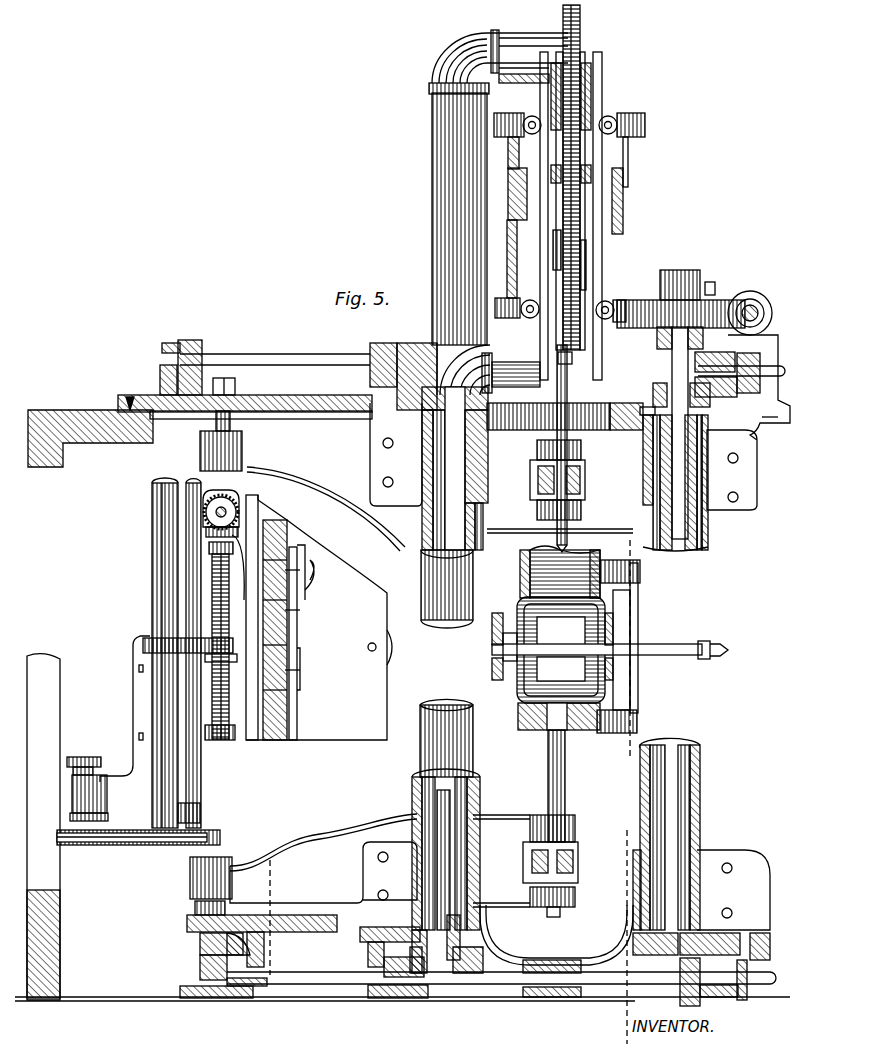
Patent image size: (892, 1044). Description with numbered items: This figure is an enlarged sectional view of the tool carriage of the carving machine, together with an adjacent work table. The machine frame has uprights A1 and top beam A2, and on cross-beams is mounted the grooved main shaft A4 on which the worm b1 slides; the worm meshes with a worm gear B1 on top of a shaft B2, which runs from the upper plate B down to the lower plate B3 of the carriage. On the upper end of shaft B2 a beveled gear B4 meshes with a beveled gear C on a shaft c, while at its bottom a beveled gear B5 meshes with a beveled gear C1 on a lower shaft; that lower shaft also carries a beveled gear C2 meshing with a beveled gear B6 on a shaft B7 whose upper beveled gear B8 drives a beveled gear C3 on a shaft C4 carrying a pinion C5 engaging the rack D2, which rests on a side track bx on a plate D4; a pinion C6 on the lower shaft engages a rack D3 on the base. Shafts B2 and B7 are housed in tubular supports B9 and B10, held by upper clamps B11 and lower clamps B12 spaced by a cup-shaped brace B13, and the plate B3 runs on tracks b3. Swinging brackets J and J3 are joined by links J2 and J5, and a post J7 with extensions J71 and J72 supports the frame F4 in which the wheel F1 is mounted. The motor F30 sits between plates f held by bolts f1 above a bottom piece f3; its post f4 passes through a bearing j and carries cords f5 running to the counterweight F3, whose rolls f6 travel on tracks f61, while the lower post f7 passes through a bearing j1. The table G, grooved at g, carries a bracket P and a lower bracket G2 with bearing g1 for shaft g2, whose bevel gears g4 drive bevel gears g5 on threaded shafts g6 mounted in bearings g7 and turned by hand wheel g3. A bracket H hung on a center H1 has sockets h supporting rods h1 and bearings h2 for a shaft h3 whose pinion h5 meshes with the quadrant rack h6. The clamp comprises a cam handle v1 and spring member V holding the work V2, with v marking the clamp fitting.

The extension of post J7 J72 is at (522, 40).
The wheel F1 is at (582, 40).
The rolls f6 is at (530, 116).
The weighted frame F3 is at (626, 118).
The vertical tracks f61 is at (600, 162).
The cords f5 is at (578, 262).
The frame F4 is at (584, 292).
The worm gear B1 is at (716, 296).
The main shaft A4 is at (750, 300).
The worm b1 is at (768, 302).
The clamps B11 is at (712, 440).
The tubular support B9 is at (708, 530).
The beveled gear C is at (708, 360).
The shaft c is at (744, 364).
The shaft B2 is at (680, 358).
The beveled gear B4 is at (660, 398).
The top beam A2 is at (96, 410).
The plate B is at (240, 399).
The plate D4 is at (130, 396).
The rack D2 is at (162, 370).
The pinion C5 is at (172, 343).
The shaft C4 is at (330, 356).
The beveled gear C3 is at (405, 343).
The swinging bracket J3 is at (261, 439).
The side track bx is at (200, 424).
The bevel gears g4 is at (225, 473).
The beveled gear B8 is at (487, 358).
The extension of post J7 J71 is at (520, 368).
The tubular support B10 is at (490, 522).
The shaft B7 is at (420, 500).
The bearing j is at (538, 478).
The link J5 is at (585, 480).
The post f4 is at (565, 545).
The bolts f1 is at (528, 568).
The vertical plates f is at (520, 605).
The motor F30 is at (542, 665).
The bottom piece f3 is at (540, 728).
The post f7 is at (562, 810).
The bearing j1 is at (578, 845).
The link J2 is at (580, 868).
The post J7 is at (478, 590).
The brace B13 is at (570, 960).
The beveled gear B6 is at (452, 975).
The beveled gear B5 is at (640, 968).
The clamps B12 is at (566, 886).
The beveled gear C1 is at (668, 992).
The upright A1 is at (43, 827).
The center H1 is at (86, 760).
The bracket H is at (128, 760).
The sockets h is at (160, 695).
The rods h1 is at (152, 600).
The shaft h3 is at (195, 750).
The bearings h2 is at (200, 815).
The quadrant rack h6 is at (120, 846).
The pinion h5 is at (195, 860).
The shaft g2 is at (218, 505).
The bearing g1 is at (232, 506).
The bevel gear g5 is at (227, 529).
The threaded shaft g6 is at (214, 605).
The hand wheel g3 is at (206, 640).
The bearings g7 is at (218, 742).
The groove g is at (262, 520).
The lower bracket G2 is at (248, 750).
The table G is at (292, 710).
The lever v is at (296, 545).
The cam handle v1 is at (302, 585).
The spring member V is at (300, 612).
The work V2 is at (297, 650).
The bracket P is at (364, 647).
The plate B3 is at (275, 860).
The swinging bracket J is at (296, 915).
The tracks b3 is at (200, 936).
The rack D3 is at (265, 955).
The base C6 is at (236, 998).
The beveled gear C2 is at (390, 1000).